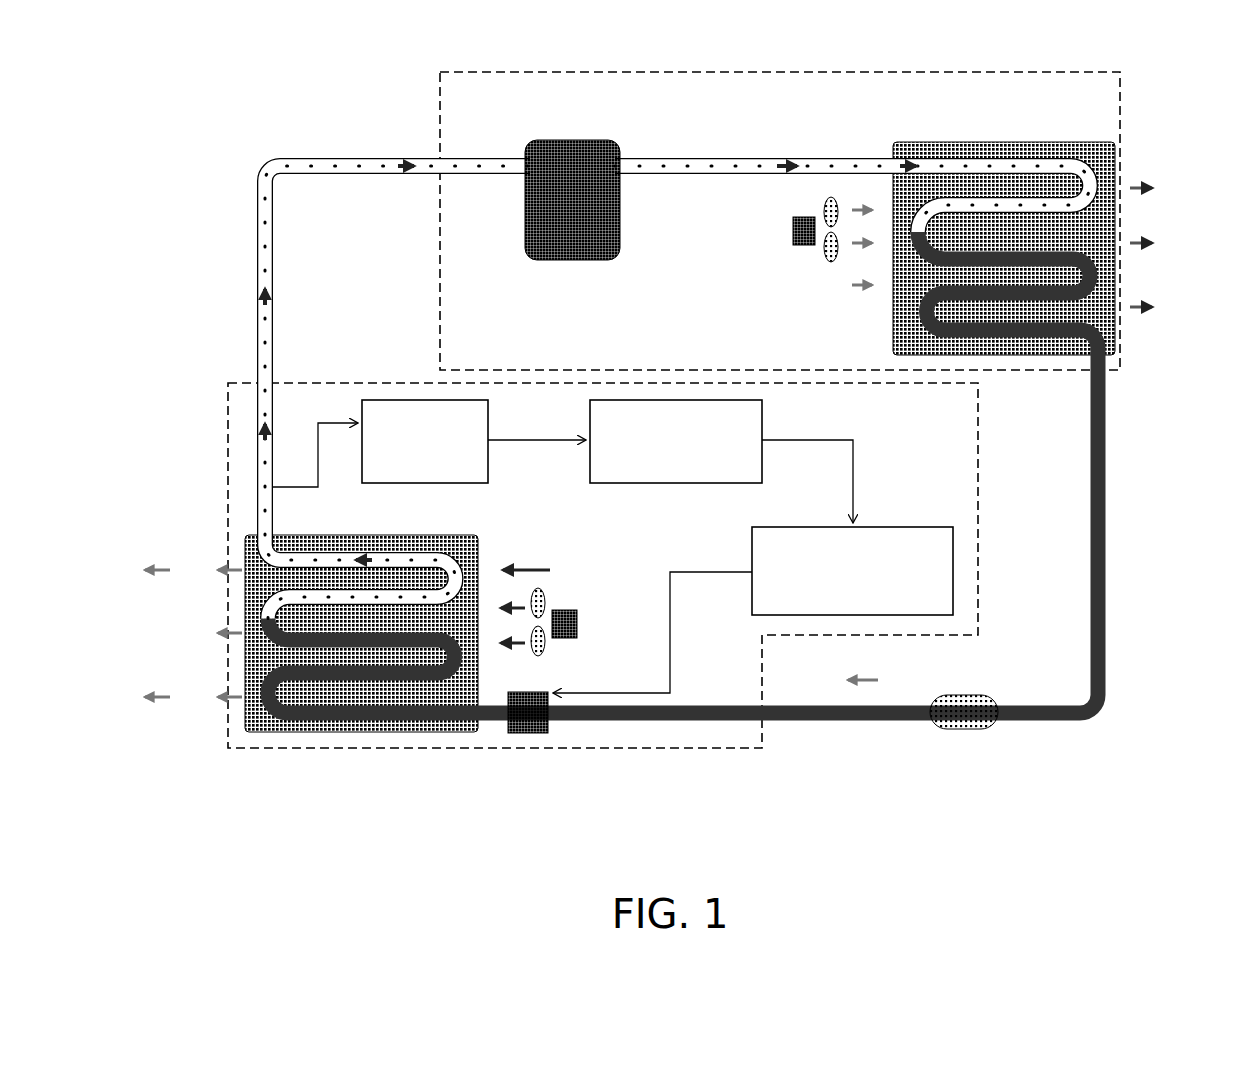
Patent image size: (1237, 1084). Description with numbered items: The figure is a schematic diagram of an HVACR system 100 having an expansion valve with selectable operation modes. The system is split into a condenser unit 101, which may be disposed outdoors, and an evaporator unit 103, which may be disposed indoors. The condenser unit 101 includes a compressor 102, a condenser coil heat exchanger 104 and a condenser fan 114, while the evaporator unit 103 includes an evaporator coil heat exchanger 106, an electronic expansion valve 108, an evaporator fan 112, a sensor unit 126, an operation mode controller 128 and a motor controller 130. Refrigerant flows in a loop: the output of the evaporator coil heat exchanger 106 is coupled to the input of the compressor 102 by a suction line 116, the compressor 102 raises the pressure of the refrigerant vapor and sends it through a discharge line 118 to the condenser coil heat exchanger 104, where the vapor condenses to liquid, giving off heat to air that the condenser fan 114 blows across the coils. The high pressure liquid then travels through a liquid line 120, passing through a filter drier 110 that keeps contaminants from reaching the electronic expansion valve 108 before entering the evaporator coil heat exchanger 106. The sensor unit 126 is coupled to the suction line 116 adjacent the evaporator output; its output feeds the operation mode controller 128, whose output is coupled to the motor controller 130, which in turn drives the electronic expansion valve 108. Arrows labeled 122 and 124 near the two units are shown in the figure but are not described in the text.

The HVACR system 100 is at (193, 116).
The condenser unit 101 is at (1120, 108).
The compressor 102 is at (550, 165).
The evaporator unit 103 is at (290, 750).
The condenser coil heat exchanger 104 is at (1087, 145).
The evaporator coil heat exchanger 106 is at (328, 730).
The electronic expansion valve 108 is at (525, 733).
The filter drier 110 is at (942, 718).
The evaporator fan 112 is at (570, 608).
The condenser fan 114 is at (797, 235).
The suction line 116 is at (257, 270).
The discharge line 118 is at (727, 155).
The liquid line 120 is at (1105, 486).
The outdoor airflow 122 is at (1171, 247).
The indoor airflow 124 is at (193, 633).
The sensor unit 126 is at (380, 443).
The operation mode controller 128 is at (625, 441).
The motor controller 130 is at (753, 566).